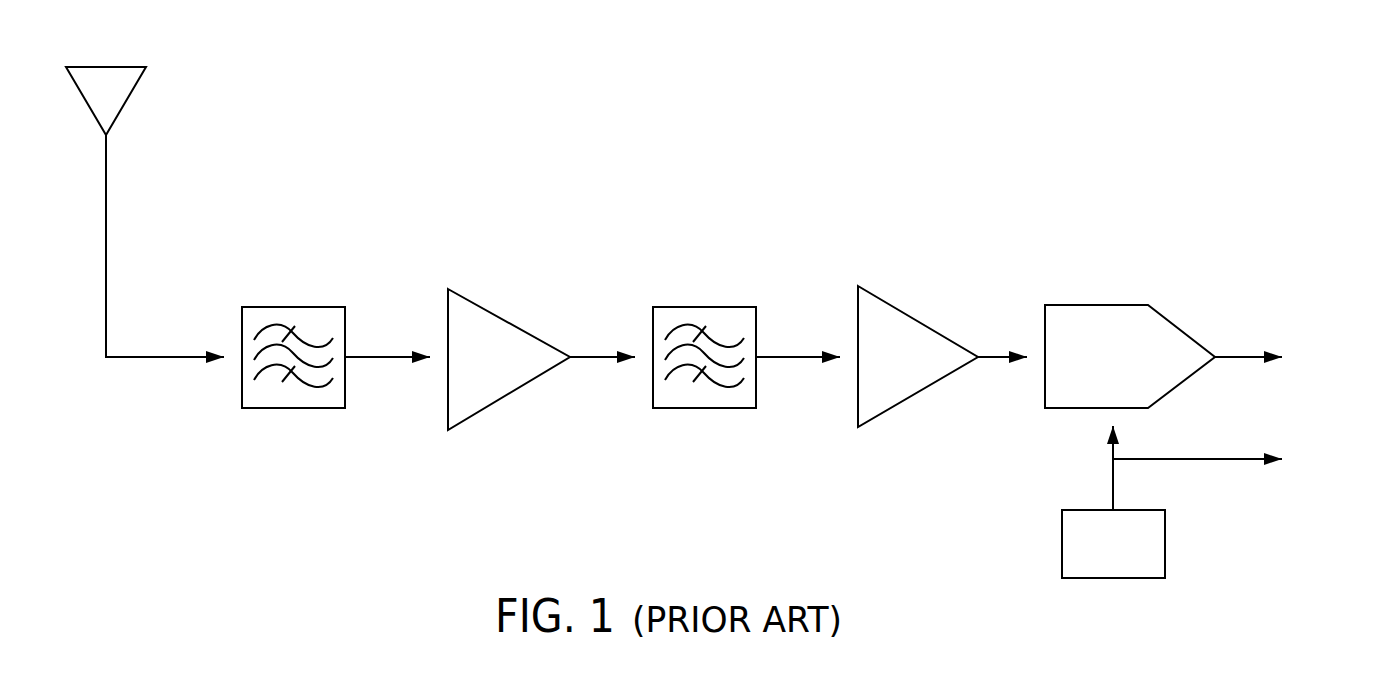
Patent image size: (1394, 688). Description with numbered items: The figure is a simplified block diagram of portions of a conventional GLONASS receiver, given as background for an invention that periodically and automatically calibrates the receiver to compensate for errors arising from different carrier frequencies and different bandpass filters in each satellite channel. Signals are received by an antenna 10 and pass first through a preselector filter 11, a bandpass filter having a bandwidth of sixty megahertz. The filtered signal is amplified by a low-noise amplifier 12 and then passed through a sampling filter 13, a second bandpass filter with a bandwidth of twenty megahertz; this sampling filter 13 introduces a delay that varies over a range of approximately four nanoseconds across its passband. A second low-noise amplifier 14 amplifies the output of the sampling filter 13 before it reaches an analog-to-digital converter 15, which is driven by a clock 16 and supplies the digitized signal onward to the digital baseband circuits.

The antenna 10 is at (118, 67).
The preselector filter 11 is at (345, 330).
The low-noise amplifier 12 is at (478, 306).
The sampling filter 13 is at (756, 330).
The low-noise amplifier 14 is at (870, 293).
The analog-to-digital converter 15 is at (1073, 305).
The clock 16 is at (1145, 510).